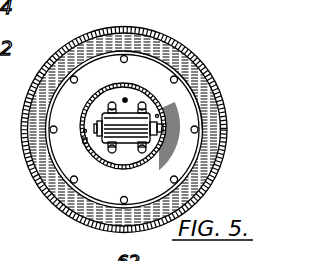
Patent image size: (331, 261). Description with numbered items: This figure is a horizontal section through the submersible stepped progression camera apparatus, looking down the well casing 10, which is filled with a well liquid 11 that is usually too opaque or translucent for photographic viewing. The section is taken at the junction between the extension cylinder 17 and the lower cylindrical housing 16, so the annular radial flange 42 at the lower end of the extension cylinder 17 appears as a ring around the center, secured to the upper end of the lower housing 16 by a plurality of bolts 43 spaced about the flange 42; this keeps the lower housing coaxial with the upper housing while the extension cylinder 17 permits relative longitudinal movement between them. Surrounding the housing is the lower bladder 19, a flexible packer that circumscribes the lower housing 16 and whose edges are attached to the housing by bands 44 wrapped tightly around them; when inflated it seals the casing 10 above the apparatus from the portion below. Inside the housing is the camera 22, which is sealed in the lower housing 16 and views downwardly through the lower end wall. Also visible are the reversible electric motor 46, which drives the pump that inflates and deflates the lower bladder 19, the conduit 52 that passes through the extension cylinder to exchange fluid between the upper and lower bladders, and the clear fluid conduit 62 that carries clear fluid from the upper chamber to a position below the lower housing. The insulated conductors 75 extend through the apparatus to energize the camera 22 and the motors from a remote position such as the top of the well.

The well casing 10 is at (167, 34).
The well liquid 11 is at (183, 56).
The lower cylindrical housing 16 is at (205, 117).
The extension cylinder 17 is at (172, 148).
The lower bladder 19 is at (197, 100).
The camera 22 is at (134, 103).
The radial flange 42 is at (186, 88).
The bolts 43 is at (79, 73).
The bands 44 is at (197, 62).
The reversible electric motor 46 is at (123, 147).
The conduit 52 is at (90, 118).
The clear fluid conduit 62 is at (125, 99).
The insulated conductors 75 is at (94, 141).